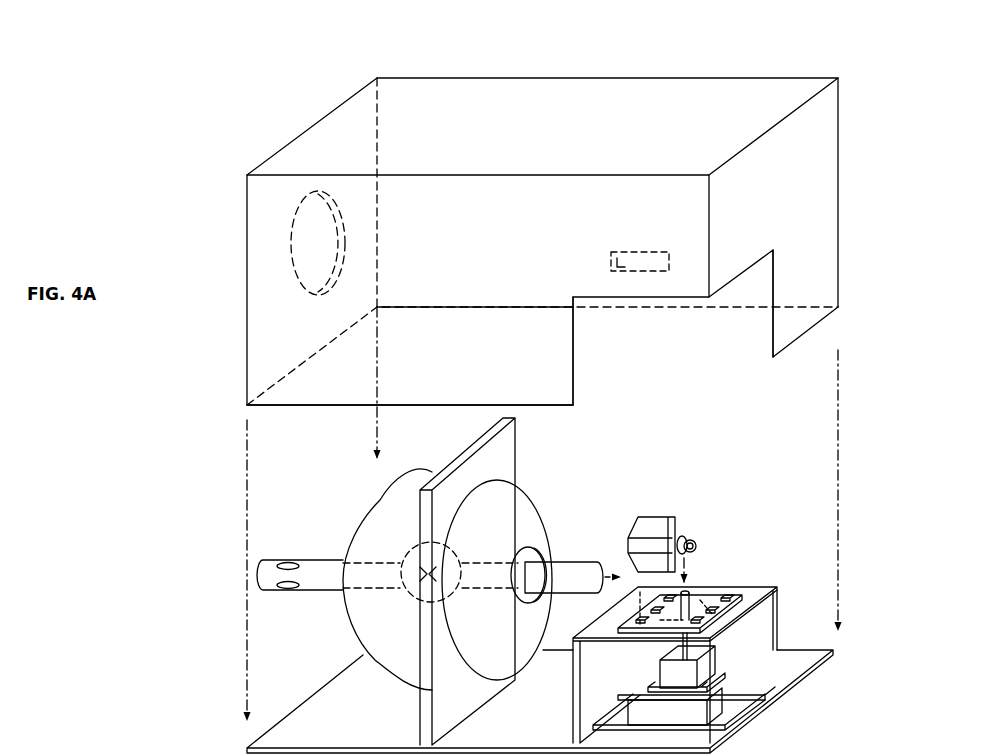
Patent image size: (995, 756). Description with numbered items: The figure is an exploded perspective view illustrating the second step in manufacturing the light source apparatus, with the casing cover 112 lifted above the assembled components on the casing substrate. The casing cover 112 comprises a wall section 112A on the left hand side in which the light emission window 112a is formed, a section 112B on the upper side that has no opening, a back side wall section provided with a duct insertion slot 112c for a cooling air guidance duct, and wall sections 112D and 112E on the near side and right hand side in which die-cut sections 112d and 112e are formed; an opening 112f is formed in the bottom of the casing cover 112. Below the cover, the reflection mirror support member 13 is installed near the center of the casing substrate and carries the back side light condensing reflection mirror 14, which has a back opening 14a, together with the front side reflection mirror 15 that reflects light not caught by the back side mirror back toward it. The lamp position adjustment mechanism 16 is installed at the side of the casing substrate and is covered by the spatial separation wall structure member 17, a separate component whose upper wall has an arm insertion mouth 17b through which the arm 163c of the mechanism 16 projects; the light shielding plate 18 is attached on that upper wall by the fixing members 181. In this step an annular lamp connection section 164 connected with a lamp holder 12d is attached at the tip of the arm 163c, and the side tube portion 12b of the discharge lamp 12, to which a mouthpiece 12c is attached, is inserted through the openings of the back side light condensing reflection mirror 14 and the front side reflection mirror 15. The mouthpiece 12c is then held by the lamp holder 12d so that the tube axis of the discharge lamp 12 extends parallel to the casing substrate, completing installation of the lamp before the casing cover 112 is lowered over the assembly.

The casing cover 112 is at (234, 342).
The wall section 112A is at (262, 308).
The section 112B is at (653, 118).
The wall section 112E is at (810, 207).
The light emission window 112a is at (300, 243).
The duct insertion slot 112c is at (505, 120).
The opening 112f is at (482, 367).
The die-cut section 112d is at (653, 373).
The die-cut section 112e is at (766, 334).
The wall section 112D is at (330, 392).
The spatial separation wall structure member 17 is at (778, 630).
The arm insertion mouth 17b is at (700, 612).
The reflection mirror support member 13 is at (507, 447).
The discharge lamp 12 is at (403, 606).
The front side reflection mirror 15 is at (378, 660).
The side tube portion 12b is at (363, 570).
The mouthpiece 12c is at (310, 568).
The back side light condensing reflection mirror 14 is at (530, 502).
The back opening 14a is at (548, 540).
The lamp holder 12d is at (658, 522).
The annular lamp connection section 164 is at (687, 540).
The light shielding plate 18 is at (758, 592).
The fixing member 181 is at (640, 622).
The arm 163c is at (690, 602).
The lamp position adjustment mechanism 16 is at (729, 660).